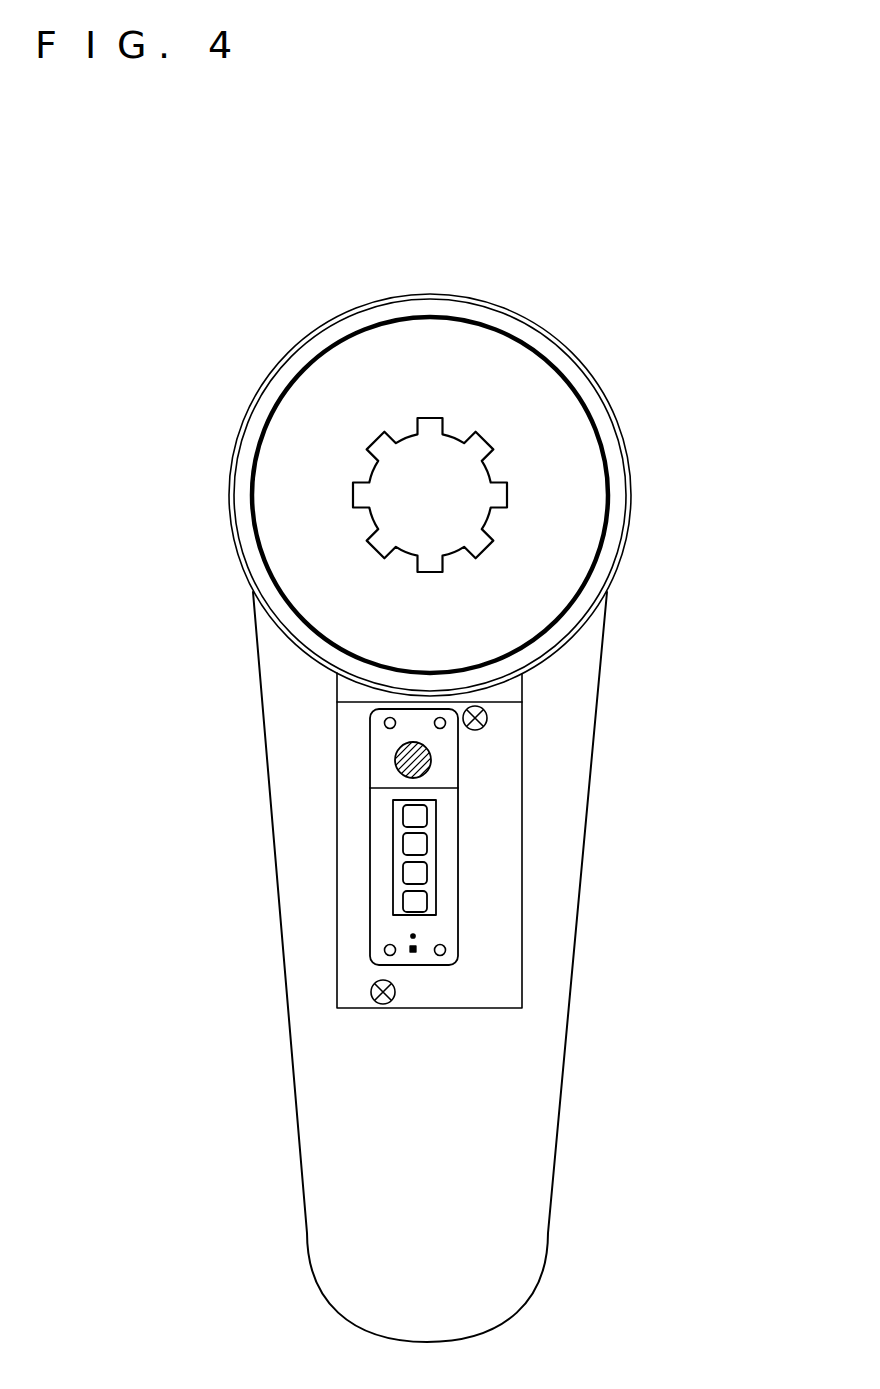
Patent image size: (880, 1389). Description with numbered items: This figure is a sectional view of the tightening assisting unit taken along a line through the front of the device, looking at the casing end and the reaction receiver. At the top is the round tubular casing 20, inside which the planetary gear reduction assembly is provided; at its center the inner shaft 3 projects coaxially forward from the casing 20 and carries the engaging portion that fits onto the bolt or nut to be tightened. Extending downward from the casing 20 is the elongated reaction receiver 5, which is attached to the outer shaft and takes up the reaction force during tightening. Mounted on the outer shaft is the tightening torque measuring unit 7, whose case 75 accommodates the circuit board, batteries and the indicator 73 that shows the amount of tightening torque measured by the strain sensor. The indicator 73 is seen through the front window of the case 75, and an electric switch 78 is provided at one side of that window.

The inner shaft 3 is at (422, 492).
The reaction receiver 5 is at (525, 1128).
The tightening torque measuring unit 7 is at (553, 913).
The tubular casing 20 is at (613, 462).
The indicator 73 is at (453, 857).
The case 75 is at (337, 884).
The electric switch 78 is at (420, 758).